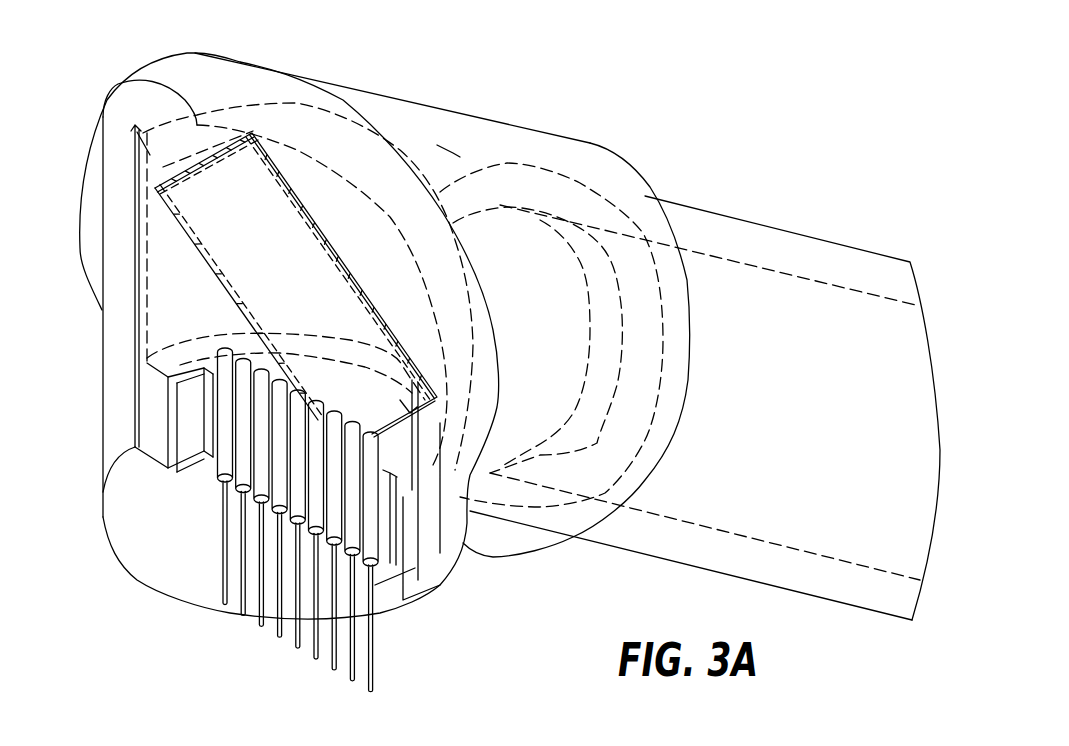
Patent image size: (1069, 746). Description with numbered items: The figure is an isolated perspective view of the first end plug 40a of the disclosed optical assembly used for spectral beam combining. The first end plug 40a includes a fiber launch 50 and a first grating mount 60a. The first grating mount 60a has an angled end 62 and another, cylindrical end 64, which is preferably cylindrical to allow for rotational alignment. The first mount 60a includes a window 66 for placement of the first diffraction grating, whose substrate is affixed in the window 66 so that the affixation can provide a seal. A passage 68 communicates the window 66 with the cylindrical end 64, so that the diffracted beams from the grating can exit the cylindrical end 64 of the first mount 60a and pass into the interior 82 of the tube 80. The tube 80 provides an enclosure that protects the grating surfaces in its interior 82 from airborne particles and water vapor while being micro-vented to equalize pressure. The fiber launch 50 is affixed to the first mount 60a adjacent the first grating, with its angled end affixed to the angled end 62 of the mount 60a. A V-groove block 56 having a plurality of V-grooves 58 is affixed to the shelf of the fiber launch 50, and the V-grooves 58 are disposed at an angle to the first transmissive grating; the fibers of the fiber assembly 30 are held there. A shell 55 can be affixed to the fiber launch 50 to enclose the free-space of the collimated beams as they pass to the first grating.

The first end plug 40a is at (99, 49).
The angled end 62 is at (172, 69).
The window 66 is at (231, 156).
The first grating mount 60a is at (374, 93).
The passage 68 is at (451, 150).
The cylindrical end 64 is at (648, 182).
The tube 80 is at (745, 219).
The interior 82 is at (848, 290).
The shell 55 is at (118, 84).
The fiber launch 50 is at (103, 330).
The V-groove block 56 is at (168, 387).
The V-grooves 58 is at (216, 421).
The fiber assembly 30 is at (212, 481).